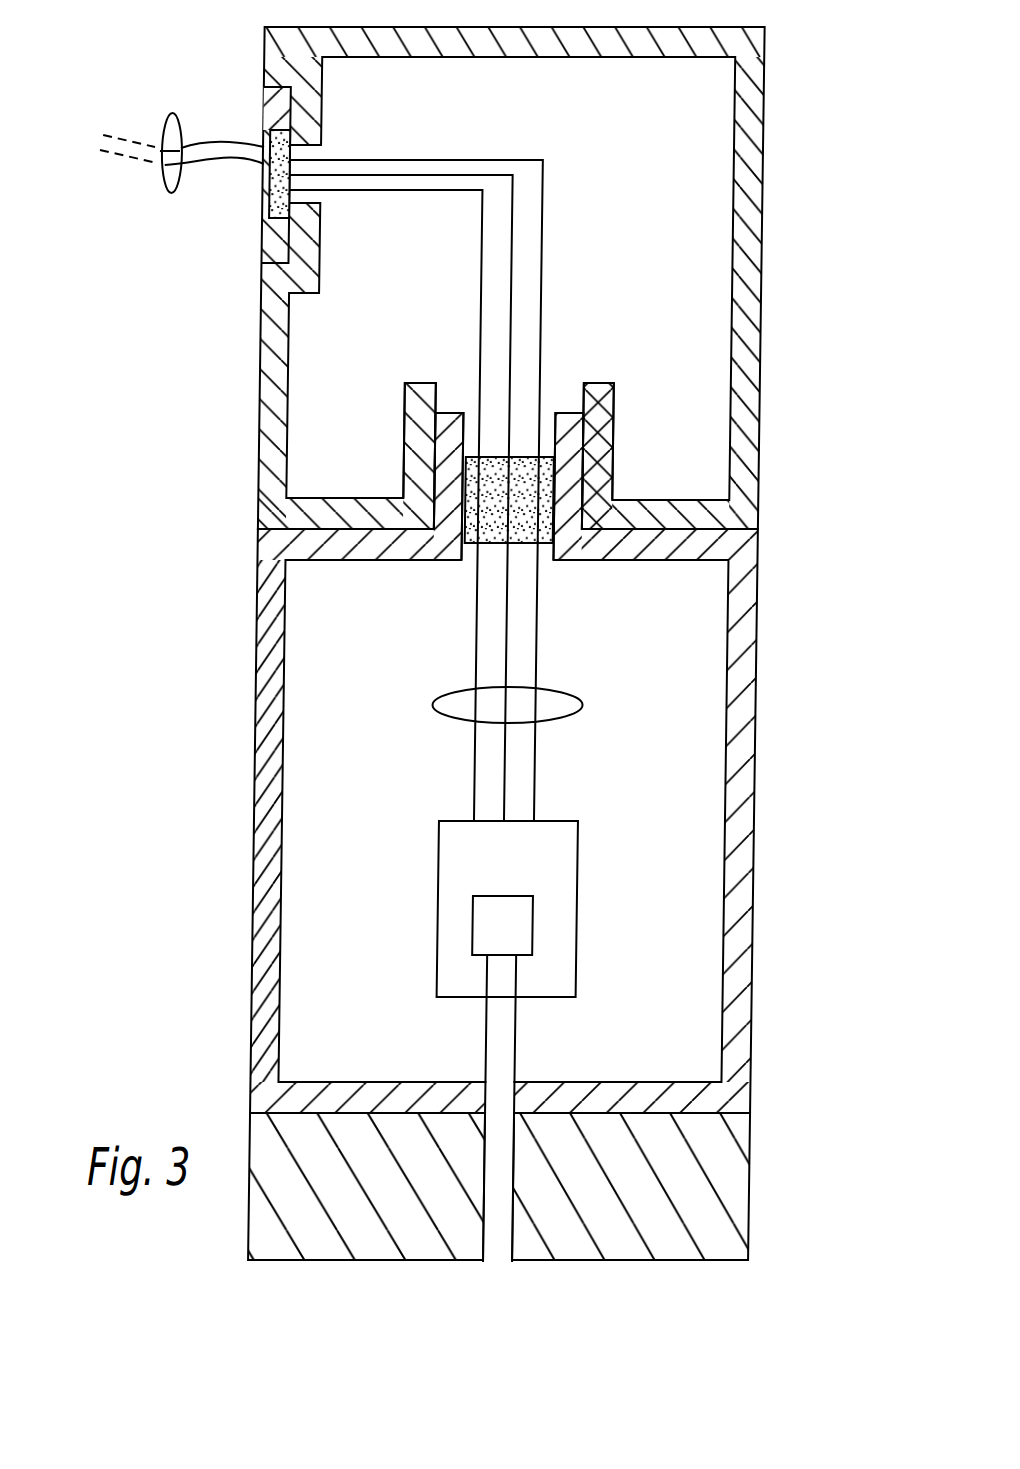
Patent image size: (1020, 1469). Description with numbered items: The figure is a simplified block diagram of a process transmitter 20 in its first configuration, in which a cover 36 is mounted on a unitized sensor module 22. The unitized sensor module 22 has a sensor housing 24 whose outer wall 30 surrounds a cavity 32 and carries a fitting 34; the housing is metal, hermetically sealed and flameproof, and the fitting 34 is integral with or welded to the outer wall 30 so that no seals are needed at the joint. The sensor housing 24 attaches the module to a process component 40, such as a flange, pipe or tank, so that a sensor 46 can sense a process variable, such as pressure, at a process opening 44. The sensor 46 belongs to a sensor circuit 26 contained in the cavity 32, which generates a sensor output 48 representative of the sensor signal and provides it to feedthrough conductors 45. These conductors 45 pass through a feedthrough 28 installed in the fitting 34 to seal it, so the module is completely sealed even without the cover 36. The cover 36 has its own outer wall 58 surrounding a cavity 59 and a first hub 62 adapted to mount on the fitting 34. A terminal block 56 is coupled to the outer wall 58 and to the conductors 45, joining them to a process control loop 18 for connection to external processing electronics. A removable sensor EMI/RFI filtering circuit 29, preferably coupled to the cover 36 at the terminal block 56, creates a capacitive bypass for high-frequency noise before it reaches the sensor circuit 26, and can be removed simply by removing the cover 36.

The process control loop 18 is at (167, 192).
The process transmitter 20 is at (480, 660).
The unitized sensor module 22 is at (508, 763).
The sensor housing 24 is at (542, 763).
The sensor circuit 26 is at (575, 878).
The feedthrough 28 is at (554, 488).
The sensor EMI/RFI filtering circuit 29 is at (277, 202).
The outer wall 30 is at (542, 763).
The cavity 32 is at (701, 663).
The fitting 34 is at (578, 438).
The cover 36 is at (512, 278).
The process component 40 is at (767, 1160).
The process opening 44 is at (508, 1261).
The feedthrough conductors 45 is at (448, 708).
The sensor 46 is at (491, 911).
The sensor output 48 is at (471, 400).
The terminal block 56 is at (266, 88).
The outer wall 58 is at (503, 278).
The cavity 59 is at (718, 122).
The first hub 62 is at (420, 413).